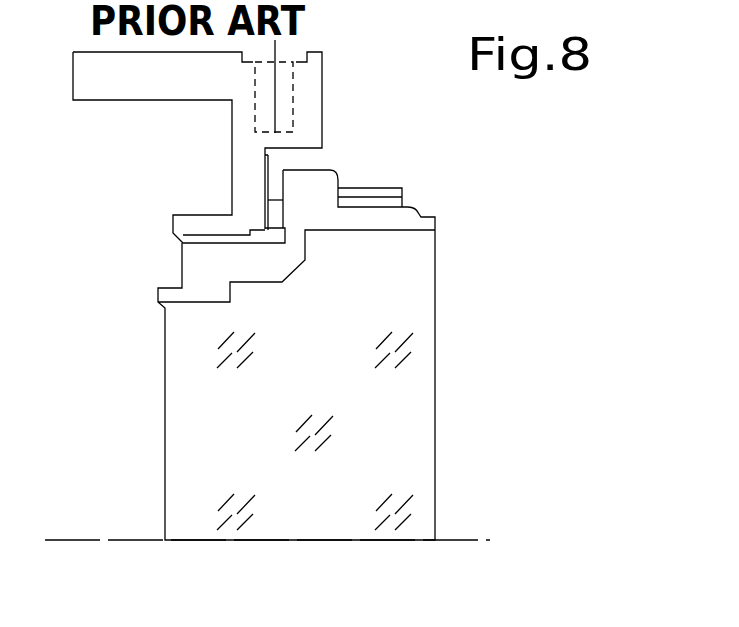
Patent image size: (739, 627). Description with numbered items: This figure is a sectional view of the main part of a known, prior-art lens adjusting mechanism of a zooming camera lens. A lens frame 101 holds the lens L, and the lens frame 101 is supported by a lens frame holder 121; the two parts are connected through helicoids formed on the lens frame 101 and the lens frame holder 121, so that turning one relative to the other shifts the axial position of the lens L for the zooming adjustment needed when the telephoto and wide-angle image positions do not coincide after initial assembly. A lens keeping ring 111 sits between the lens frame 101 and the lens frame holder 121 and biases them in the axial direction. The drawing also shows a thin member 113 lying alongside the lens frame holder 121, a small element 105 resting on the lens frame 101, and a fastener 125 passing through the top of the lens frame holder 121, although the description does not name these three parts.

The lens frame 101 is at (312, 208).
The gasket / spacer 105 is at (373, 200).
The lens keeping ring 111 is at (270, 163).
The shim plate 113 is at (274, 210).
The lens frame holder 121 is at (237, 182).
The bolt 125 is at (307, 109).
The lens L is at (333, 533).